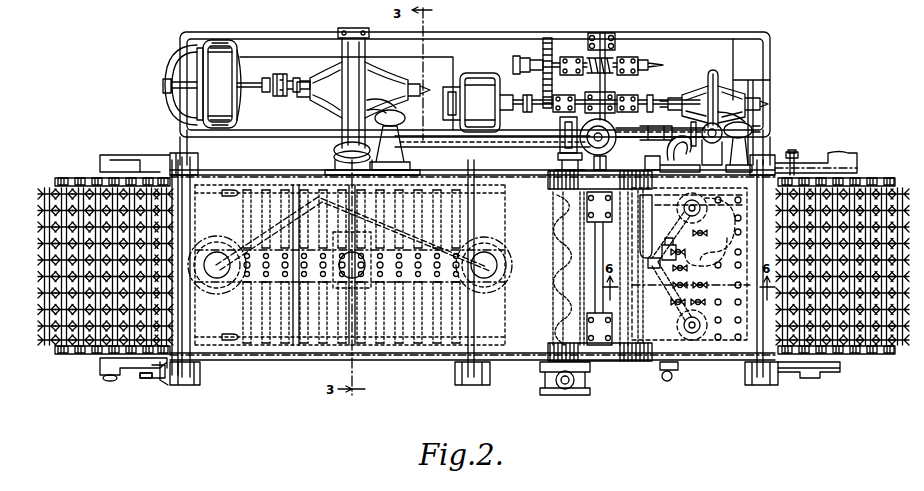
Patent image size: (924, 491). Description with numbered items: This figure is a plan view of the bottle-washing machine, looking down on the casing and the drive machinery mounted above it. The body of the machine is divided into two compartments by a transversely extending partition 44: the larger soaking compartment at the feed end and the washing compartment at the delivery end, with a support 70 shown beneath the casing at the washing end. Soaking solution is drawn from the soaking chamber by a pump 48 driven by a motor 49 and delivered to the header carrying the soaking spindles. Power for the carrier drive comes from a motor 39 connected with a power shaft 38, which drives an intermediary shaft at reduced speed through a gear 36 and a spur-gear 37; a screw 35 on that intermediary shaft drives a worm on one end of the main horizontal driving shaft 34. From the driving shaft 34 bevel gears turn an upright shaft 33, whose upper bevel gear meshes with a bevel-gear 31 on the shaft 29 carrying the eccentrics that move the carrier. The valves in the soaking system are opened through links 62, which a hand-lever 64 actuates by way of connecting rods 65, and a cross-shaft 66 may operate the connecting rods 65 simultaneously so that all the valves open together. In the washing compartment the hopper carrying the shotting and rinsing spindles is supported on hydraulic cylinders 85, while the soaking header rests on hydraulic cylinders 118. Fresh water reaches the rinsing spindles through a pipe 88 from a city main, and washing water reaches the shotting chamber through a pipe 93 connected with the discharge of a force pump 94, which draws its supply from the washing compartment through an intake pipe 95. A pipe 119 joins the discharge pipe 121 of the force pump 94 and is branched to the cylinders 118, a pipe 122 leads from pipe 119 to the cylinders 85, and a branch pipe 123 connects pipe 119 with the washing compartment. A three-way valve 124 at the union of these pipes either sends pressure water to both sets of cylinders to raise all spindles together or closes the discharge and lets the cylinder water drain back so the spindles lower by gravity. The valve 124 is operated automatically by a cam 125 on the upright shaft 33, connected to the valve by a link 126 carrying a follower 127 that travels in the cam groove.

The motor 49 is at (218, 42).
The pump 48 is at (352, 29).
The motor 39 is at (475, 73).
The gear 36 is at (549, 37).
The screw 35 is at (602, 33).
The force pump 94 is at (714, 70).
The main horizontal driving shaft 34 is at (598, 90).
The power shaft 38 is at (604, 100).
The spur-gear 37 is at (530, 112).
The cam 125 is at (616, 128).
The link 126 is at (655, 135).
The discharge pipe 121 is at (756, 129).
The intake pipe 95 is at (796, 154).
The pipe 119 is at (460, 149).
The upright shaft 33 is at (558, 159).
The bevel-gear 31 is at (610, 150).
The follower 127 is at (676, 150).
The branch pipe 123 is at (707, 142).
The three-way valve 124 is at (688, 194).
The links 62 is at (296, 190).
The connecting rods 65 is at (222, 194).
The hydraulic cylinders 118 is at (220, 252).
The pipe 122 is at (632, 229).
The shaft 29 is at (582, 255).
The hydraulic cylinders 85 is at (680, 207).
The pipe 88 is at (722, 236).
The pipe 93 is at (714, 265).
The partition 44 is at (612, 322).
The support 70 is at (672, 376).
The hand-lever 64 is at (146, 380).
The cross-shaft 66 is at (163, 380).